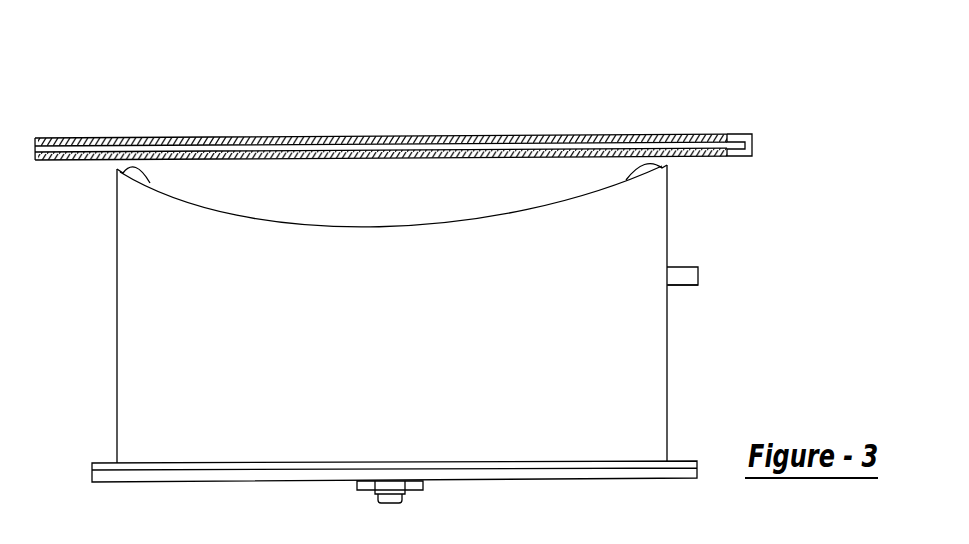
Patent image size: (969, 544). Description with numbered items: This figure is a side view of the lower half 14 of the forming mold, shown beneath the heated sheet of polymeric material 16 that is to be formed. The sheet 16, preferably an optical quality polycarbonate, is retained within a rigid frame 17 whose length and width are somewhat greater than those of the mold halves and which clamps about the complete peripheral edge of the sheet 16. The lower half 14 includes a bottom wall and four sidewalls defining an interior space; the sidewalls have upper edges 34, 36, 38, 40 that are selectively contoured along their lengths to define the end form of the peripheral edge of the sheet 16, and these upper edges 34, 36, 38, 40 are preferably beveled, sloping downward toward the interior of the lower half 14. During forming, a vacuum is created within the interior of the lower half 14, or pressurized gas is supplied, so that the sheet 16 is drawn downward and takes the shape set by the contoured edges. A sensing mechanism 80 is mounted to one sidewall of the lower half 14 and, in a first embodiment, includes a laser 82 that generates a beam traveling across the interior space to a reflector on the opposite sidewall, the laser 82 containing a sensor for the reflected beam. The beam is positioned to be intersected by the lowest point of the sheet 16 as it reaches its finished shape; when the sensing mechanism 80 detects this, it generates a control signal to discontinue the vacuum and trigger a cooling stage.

The lower half 14 is at (117, 259).
The heated sheet of polymeric material 16 is at (599, 147).
The rigid frame 17 is at (742, 134).
The upper edge 34 is at (391, 196).
The upper edge 38 is at (536, 206).
The upper edge 36 is at (626, 180).
The upper edge 40 is at (150, 183).
The sensing mechanism 80 is at (688, 266).
The laser 82 is at (683, 286).